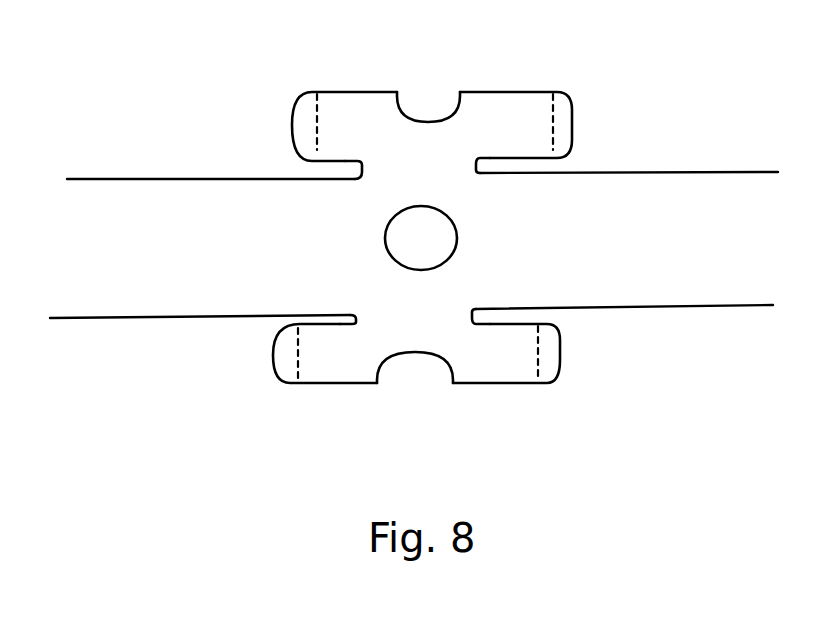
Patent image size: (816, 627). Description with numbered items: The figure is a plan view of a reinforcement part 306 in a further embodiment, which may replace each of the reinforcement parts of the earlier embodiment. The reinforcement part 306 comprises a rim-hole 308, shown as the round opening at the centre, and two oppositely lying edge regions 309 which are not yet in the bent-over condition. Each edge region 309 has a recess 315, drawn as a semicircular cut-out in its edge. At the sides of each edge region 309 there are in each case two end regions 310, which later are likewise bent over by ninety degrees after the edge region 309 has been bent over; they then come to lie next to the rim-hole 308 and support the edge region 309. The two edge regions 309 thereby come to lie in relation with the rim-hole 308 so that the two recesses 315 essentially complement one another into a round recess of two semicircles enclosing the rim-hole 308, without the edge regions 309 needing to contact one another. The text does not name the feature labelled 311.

The reinforcement part 306 is at (152, 178).
The rim-hole 308 is at (457, 235).
The edge region 309 is at (522, 105).
The end region 310 is at (288, 110).
The fold 311 is at (337, 175).
The recess 315 is at (430, 98).